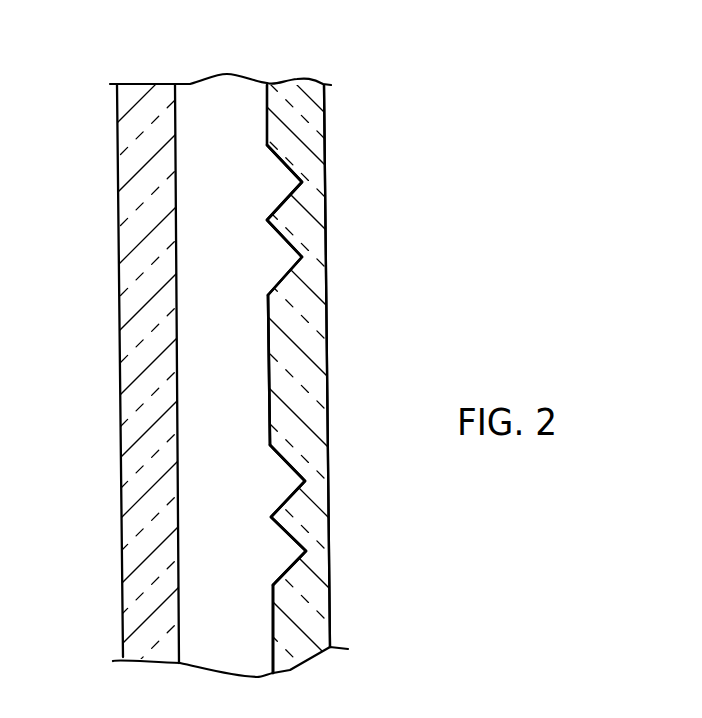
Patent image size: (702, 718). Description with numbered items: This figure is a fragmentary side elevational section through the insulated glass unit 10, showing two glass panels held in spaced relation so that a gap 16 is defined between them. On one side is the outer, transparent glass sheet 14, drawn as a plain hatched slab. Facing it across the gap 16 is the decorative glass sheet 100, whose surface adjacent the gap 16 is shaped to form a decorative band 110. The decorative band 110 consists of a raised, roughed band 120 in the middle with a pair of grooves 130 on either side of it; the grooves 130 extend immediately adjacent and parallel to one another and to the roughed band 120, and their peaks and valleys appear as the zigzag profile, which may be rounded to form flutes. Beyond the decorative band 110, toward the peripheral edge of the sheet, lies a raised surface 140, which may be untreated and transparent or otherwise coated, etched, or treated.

The insulated glass unit 10 is at (153, 73).
The outer transparent glass sheet 14 is at (137, 487).
The gap 16 is at (230, 134).
The decorative glass sheet 100 is at (325, 611).
The decorative band 110 is at (348, 325).
The raised roughed band 120 is at (268, 362).
The grooves 130 is at (274, 259).
The raised surfaces 140 is at (272, 615).